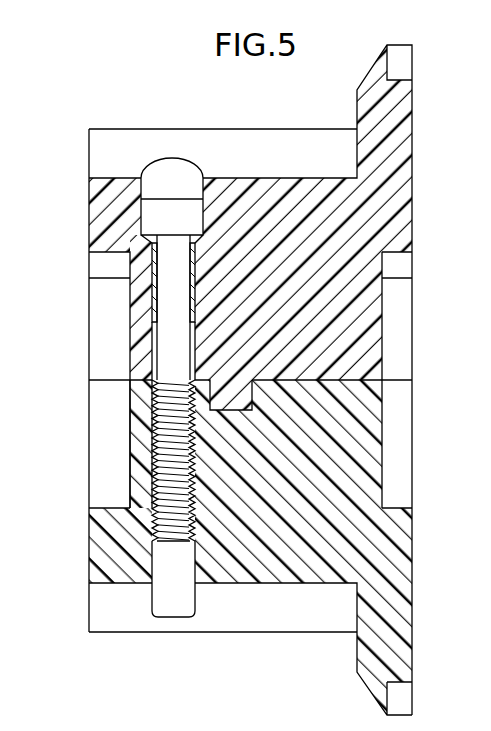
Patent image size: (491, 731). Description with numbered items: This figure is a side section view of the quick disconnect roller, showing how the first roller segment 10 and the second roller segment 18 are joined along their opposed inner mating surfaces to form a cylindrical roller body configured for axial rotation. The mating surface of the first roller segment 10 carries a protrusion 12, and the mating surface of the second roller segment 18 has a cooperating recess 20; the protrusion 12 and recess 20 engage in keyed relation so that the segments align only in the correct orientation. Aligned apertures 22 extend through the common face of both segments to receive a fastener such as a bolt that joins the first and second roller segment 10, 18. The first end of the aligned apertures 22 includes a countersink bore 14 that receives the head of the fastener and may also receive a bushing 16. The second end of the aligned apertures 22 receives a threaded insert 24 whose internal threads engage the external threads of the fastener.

The first roller segment 10 is at (190, 138).
The protrusion 12 is at (242, 398).
The countersink bore 14 is at (171, 188).
The bushing 16 is at (152, 307).
The second roller segment 18 is at (304, 615).
The recess 20 is at (235, 390).
The aligned apertures 22 is at (173, 602).
The threaded insert 24 is at (150, 458).